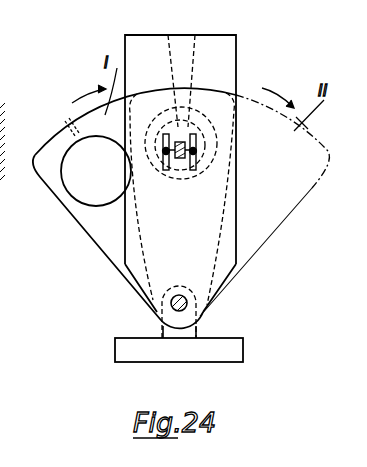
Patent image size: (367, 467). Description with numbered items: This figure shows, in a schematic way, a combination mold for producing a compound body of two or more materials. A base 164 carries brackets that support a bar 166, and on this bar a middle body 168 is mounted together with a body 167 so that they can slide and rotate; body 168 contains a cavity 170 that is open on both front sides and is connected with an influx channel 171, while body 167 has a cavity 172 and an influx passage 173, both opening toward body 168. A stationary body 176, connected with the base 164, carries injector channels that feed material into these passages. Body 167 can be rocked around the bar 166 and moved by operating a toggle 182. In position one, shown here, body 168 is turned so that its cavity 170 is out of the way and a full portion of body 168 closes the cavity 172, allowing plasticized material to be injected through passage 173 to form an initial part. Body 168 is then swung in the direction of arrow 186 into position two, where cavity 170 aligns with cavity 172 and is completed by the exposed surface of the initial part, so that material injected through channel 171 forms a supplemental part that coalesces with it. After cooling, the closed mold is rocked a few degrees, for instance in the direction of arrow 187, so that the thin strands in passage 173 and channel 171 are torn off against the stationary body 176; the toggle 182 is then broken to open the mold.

The base 164 is at (238, 361).
The bar 166 is at (187, 303).
The body 167 is at (229, 242).
The body 168 is at (104, 238).
The cavity 170 is at (80, 191).
The influx channel 171 is at (68, 134).
The cavity 172 is at (189, 172).
The influx passage 173 is at (215, 199).
The body 176 is at (236, 52).
The toggle 182 is at (190, 160).
The arrow 186 is at (86, 88).
The arrow 187 is at (281, 92).